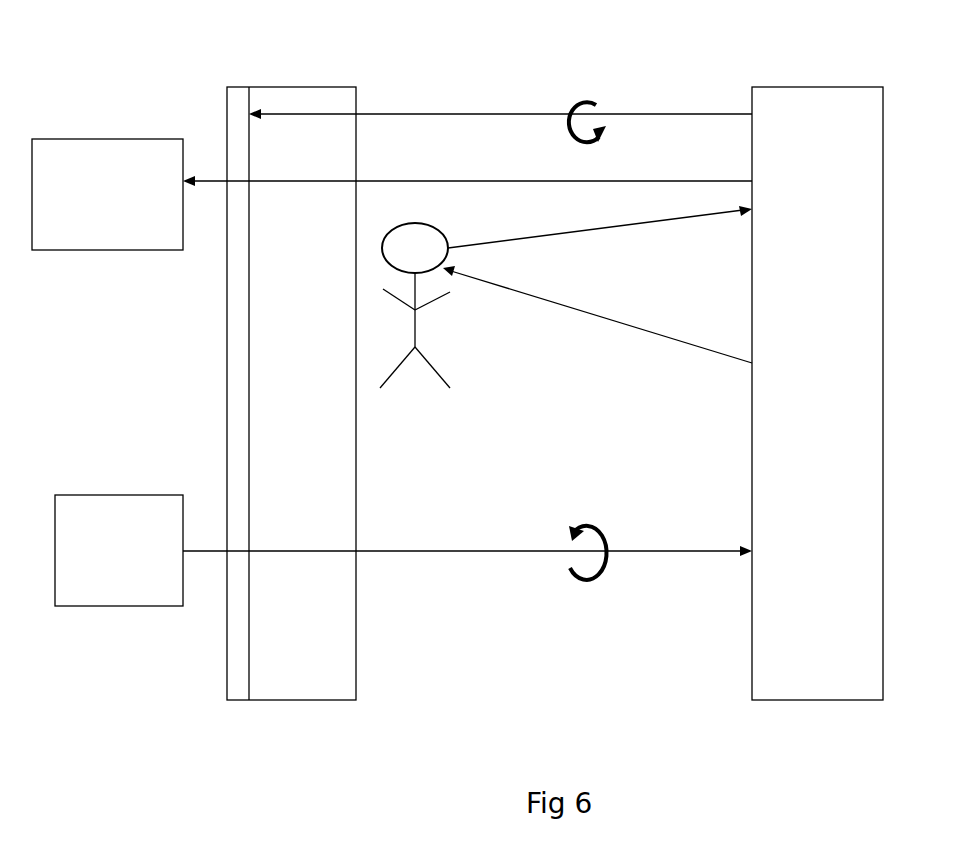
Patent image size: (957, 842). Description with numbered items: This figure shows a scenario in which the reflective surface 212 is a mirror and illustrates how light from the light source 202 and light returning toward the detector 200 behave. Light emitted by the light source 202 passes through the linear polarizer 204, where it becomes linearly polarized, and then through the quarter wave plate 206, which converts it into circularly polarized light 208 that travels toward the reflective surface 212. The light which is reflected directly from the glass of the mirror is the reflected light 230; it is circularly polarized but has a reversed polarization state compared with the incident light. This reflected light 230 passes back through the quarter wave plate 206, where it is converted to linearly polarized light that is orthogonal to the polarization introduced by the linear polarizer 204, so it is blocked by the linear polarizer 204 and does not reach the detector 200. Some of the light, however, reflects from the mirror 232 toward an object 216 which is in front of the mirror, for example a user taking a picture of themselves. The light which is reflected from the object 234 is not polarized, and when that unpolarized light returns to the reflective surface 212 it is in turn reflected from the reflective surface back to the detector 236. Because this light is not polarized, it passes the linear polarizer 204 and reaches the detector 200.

The detector 200 is at (108, 139).
The light source 202 is at (118, 495).
The linear polarizer 204 is at (238, 700).
The quarter wave plate 206 is at (297, 87).
The circularly polarized light 208 is at (445, 551).
The reflective surface 212 is at (813, 87).
The object 216 is at (457, 312).
The reflected light 230 is at (443, 114).
The light reflected from the mirror to the object 232 is at (682, 345).
The light reflected from the object 234 is at (697, 220).
The light reflected back to the detector 236 is at (550, 181).